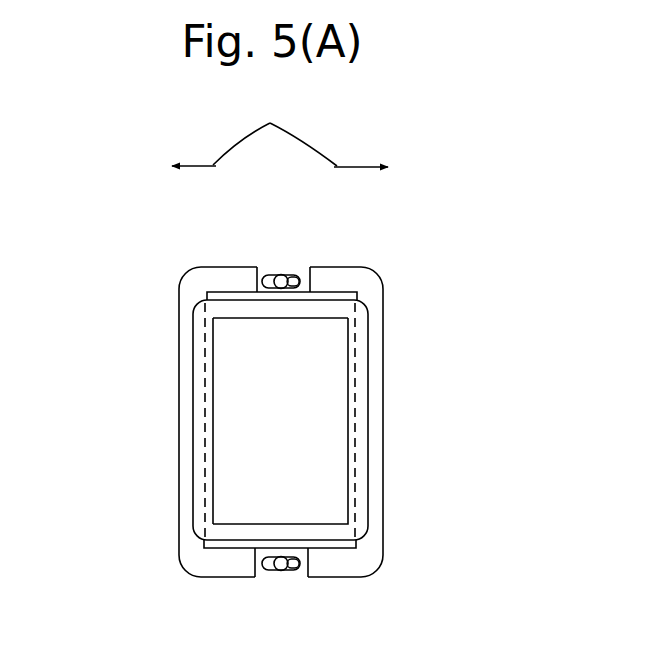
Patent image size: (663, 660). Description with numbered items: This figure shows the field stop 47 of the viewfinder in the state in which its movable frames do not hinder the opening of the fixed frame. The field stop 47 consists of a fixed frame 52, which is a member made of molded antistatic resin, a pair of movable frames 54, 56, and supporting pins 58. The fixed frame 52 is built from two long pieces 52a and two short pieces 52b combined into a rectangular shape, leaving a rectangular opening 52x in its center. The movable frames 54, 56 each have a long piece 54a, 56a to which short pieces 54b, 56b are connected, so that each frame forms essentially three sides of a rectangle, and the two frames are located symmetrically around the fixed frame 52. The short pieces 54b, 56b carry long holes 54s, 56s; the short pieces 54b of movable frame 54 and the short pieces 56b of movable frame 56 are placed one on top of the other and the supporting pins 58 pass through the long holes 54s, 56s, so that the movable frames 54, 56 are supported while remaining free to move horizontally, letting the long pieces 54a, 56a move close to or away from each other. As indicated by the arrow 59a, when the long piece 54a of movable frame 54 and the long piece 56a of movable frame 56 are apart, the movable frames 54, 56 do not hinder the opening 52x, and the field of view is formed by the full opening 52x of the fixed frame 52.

The field stop 47 is at (396, 262).
The fixed frame 52 is at (219, 461).
The long piece 52a is at (208, 405).
The short piece 52b is at (283, 320).
The rectangular opening 52x is at (315, 485).
The movable frame 54 is at (172, 423).
The long piece 54a is at (178, 333).
The short piece 54b is at (212, 266).
The long hole 54s is at (295, 382).
The movable frame 56 is at (389, 398).
The long piece 56a is at (384, 322).
The short piece 56b is at (350, 266).
The long hole 56s is at (295, 273).
The supporting pin 58 is at (275, 267).
The arrow 59a is at (280, 131).